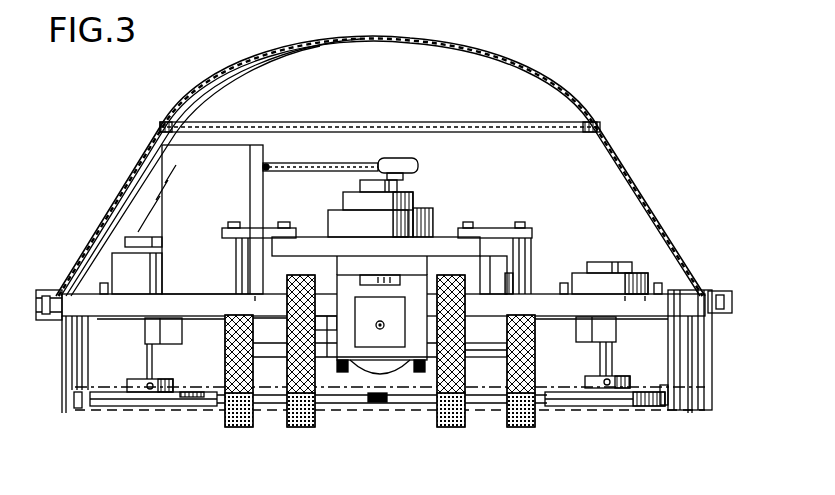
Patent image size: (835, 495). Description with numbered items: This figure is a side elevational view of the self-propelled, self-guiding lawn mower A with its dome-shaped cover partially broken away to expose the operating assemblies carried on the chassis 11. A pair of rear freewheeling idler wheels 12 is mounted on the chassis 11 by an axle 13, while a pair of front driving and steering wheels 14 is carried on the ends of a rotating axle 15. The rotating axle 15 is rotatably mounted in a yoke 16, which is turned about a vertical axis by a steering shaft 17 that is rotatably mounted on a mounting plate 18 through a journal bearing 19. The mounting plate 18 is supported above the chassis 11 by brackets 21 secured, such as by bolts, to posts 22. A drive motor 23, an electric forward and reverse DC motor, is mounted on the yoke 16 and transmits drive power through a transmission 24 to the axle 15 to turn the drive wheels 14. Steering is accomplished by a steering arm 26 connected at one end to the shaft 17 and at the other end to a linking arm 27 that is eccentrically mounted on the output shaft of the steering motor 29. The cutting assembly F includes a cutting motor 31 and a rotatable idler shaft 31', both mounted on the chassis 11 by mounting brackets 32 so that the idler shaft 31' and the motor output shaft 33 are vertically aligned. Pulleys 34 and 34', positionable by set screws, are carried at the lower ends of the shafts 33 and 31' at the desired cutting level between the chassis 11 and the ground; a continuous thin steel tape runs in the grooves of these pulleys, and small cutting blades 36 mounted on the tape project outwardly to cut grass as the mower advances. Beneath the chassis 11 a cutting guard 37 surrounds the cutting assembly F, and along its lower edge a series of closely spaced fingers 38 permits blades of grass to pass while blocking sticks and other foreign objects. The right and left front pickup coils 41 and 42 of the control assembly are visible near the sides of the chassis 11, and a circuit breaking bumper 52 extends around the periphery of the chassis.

The lawn mower A is at (600, 130).
The chassis 11 is at (198, 305).
The rear idler wheels 12 is at (240, 430).
The axle 13 is at (485, 348).
The front driving and steering wheels 14 is at (296, 428).
The rotating axle 15 is at (324, 348).
The yoke 16 is at (414, 263).
The steering shaft 17 is at (350, 185).
The mounting plate 18 is at (312, 247).
The journal bearing 19 is at (428, 222).
The brackets 21 is at (246, 230).
The posts 22 is at (232, 265).
The drive motor 23 is at (352, 292).
The transmission 24 is at (366, 350).
The steering arm 26 is at (415, 170).
The linking arm 27 is at (342, 164).
The steering motor 29 is at (222, 190).
The cutting motor 31 is at (157, 228).
The rotatable idler shaft 31' is at (622, 355).
The mounting brackets 32 is at (106, 293).
The motor output shaft 33 is at (147, 360).
The pulley 34 is at (318, 435).
The pulley 34' is at (605, 420).
The cutting blades 36 is at (78, 413).
The cutting guard 37 is at (712, 350).
The fingers 38 is at (63, 413).
The right front pickup coil 41 is at (148, 332).
The left front pickup coil 42 is at (588, 322).
The circuit breaking bumper 52 is at (734, 305).
The cutting assembly F is at (620, 370).